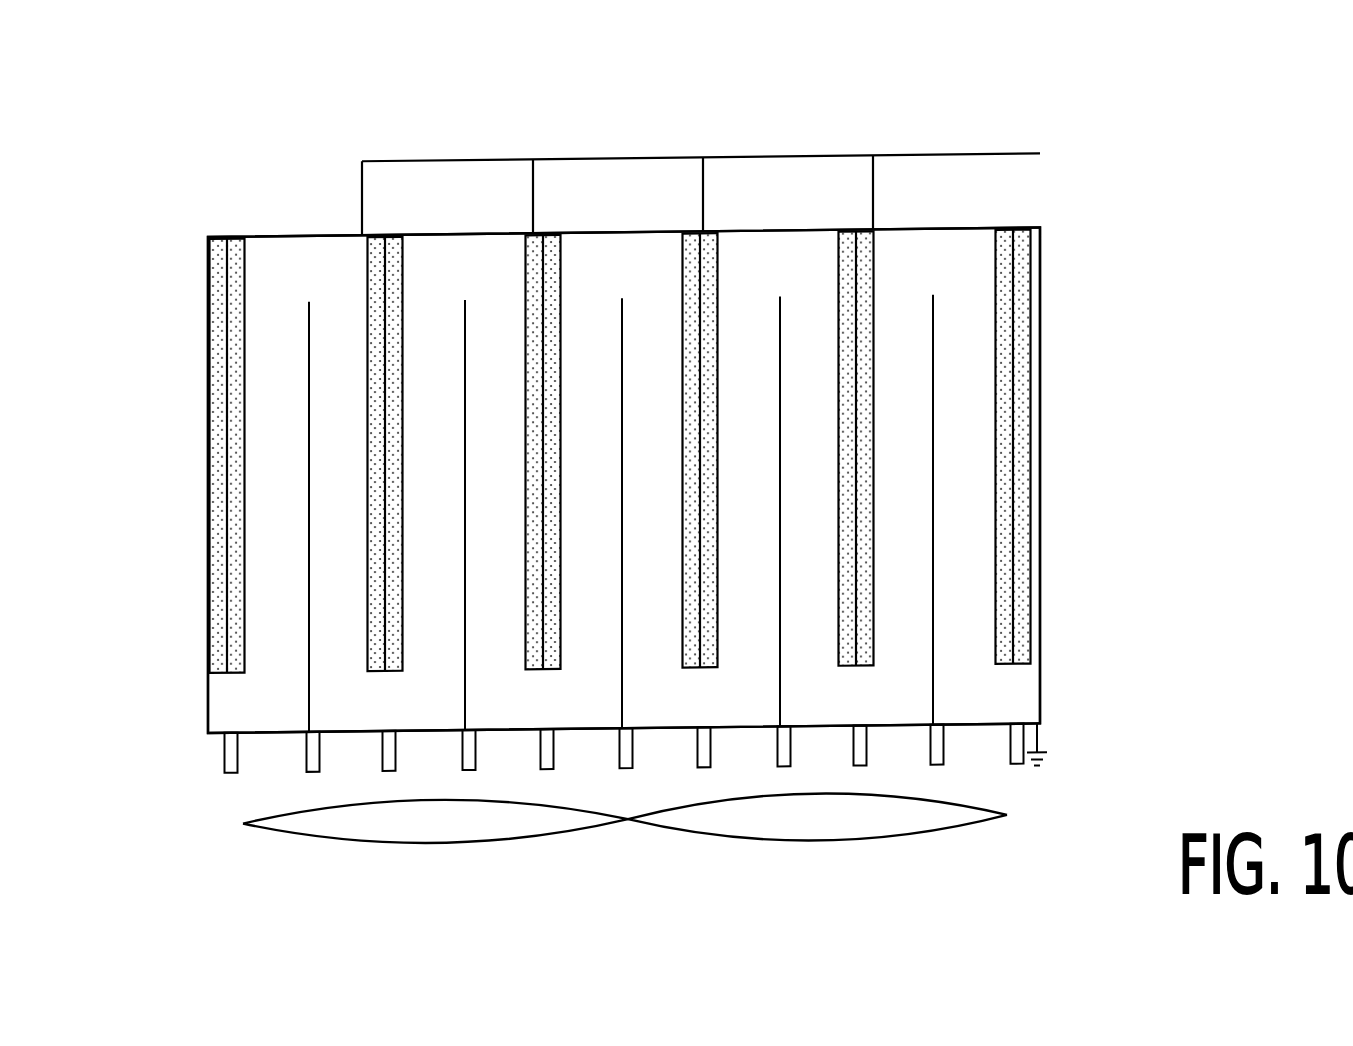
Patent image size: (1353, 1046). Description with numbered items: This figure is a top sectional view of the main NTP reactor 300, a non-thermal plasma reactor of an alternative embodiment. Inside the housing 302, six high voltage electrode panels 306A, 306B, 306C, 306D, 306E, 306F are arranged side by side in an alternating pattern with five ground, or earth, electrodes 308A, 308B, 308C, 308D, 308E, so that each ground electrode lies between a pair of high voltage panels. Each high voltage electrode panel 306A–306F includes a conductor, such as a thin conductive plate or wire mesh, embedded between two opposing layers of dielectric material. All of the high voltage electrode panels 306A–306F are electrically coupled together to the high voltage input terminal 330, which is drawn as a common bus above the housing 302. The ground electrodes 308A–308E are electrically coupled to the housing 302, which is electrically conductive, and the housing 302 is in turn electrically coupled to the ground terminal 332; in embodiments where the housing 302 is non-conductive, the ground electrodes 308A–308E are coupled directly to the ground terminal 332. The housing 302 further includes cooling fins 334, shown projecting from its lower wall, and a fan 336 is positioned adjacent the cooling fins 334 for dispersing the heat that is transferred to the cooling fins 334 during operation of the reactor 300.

The main NTP reactor 300 is at (624, 393).
The housing 302 is at (272, 236).
The high voltage electrode panel 306A is at (247, 656).
The high voltage electrode panel 306B is at (403, 656).
The high voltage electrode panel 306C is at (561, 652).
The high voltage electrode panel 306D is at (718, 650).
The high voltage electrode panel 306E is at (874, 648).
The high voltage electrode panel 306F is at (997, 632).
The ground electrode 308A is at (325, 263).
The ground electrode 308B is at (488, 266).
The ground electrode 308C is at (645, 266).
The ground electrode 308D is at (797, 266).
The ground electrode 308E is at (948, 268).
The high voltage input terminal 330 is at (951, 154).
The ground terminal 332 is at (1044, 738).
The cooling fins 334 is at (218, 760).
The fan 336 is at (443, 852).